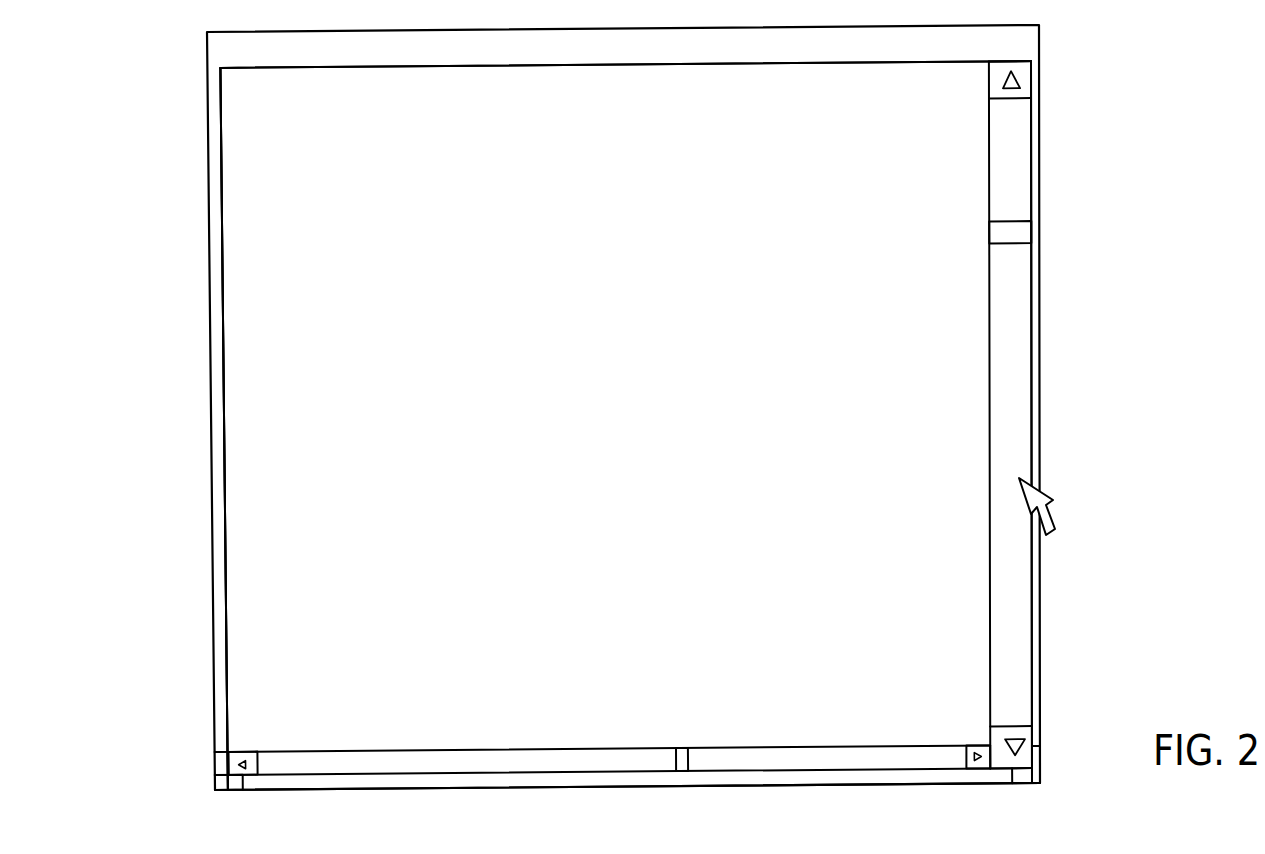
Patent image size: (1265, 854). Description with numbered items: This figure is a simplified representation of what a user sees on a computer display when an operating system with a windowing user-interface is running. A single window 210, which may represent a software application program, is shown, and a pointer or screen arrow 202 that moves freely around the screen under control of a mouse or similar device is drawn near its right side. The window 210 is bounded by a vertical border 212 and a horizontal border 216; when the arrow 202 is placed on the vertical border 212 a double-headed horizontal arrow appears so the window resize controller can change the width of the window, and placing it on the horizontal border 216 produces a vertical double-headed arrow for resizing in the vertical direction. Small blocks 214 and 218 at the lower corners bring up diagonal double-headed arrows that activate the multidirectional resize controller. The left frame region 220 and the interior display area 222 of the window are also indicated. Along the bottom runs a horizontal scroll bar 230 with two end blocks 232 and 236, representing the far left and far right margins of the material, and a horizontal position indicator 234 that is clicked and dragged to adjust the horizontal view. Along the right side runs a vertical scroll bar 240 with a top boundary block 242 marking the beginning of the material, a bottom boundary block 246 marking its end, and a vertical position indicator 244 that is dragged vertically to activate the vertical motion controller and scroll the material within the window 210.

The pointer 202 is at (1045, 494).
The window 210 is at (208, 82).
The vertical border 212 is at (208, 198).
The small block 214 is at (214, 777).
The horizontal border 216 is at (503, 780).
The small block 218 is at (1040, 768).
The left border 220 is at (222, 333).
The display area 222 is at (226, 394).
The horizontal scroll bar 230 is at (340, 752).
The end block 232 is at (238, 752).
The horizontal position indicator 234 is at (683, 747).
The end block 236 is at (975, 745).
The vertical scroll bar 240 is at (1013, 418).
The top boundary block 242 is at (986, 82).
The vertical position indicator 244 is at (987, 232).
The bottom boundary block 246 is at (989, 740).